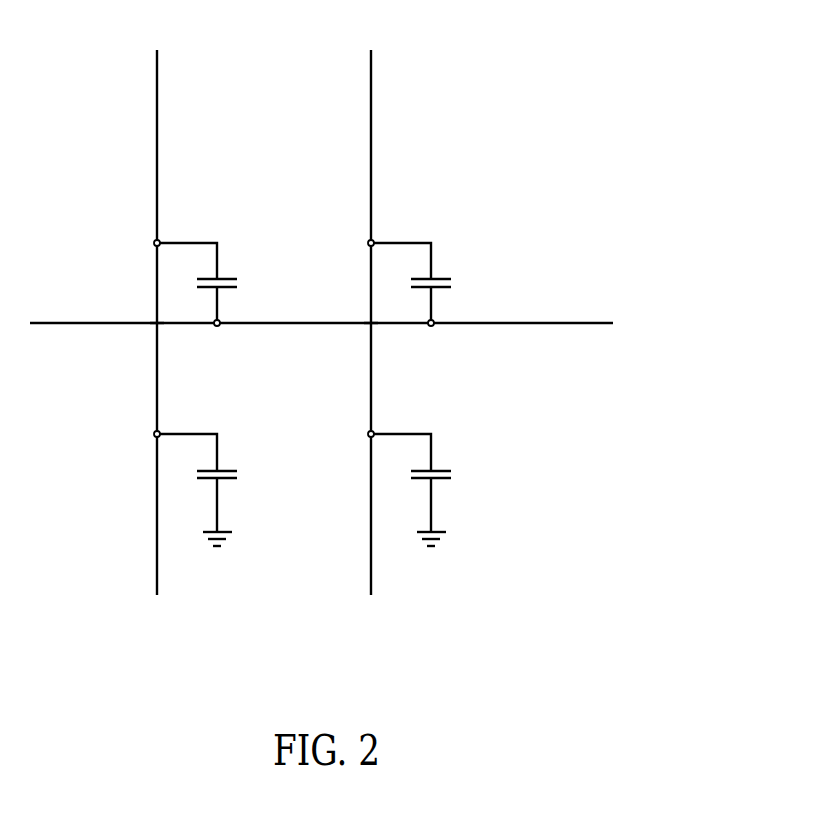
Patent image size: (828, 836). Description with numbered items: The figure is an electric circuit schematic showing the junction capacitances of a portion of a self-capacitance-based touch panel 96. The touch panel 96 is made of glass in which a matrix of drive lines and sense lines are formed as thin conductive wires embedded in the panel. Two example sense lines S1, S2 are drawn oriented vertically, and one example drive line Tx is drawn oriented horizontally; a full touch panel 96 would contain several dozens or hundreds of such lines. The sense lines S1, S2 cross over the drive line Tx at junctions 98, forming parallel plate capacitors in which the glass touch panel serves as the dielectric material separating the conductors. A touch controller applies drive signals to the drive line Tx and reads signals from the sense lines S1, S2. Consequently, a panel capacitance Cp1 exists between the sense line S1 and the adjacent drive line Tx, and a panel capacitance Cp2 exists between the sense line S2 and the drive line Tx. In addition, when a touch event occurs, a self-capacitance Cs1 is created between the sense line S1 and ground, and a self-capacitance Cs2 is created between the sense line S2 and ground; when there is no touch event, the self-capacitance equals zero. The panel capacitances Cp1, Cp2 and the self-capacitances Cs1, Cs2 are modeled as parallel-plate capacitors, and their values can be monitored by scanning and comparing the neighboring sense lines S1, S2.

The self-capacitance-based touch panel 96 is at (558, 131).
The junctions 98 is at (352, 332).
The sense line S1 is at (157, 305).
The sense line S2 is at (371, 305).
The drive line Tx is at (321, 310).
The panel capacitance Cp1 is at (212, 283).
The panel capacitance Cp2 is at (426, 283).
The self-capacitance Cs1 is at (211, 488).
The self-capacitance Cs2 is at (425, 488).